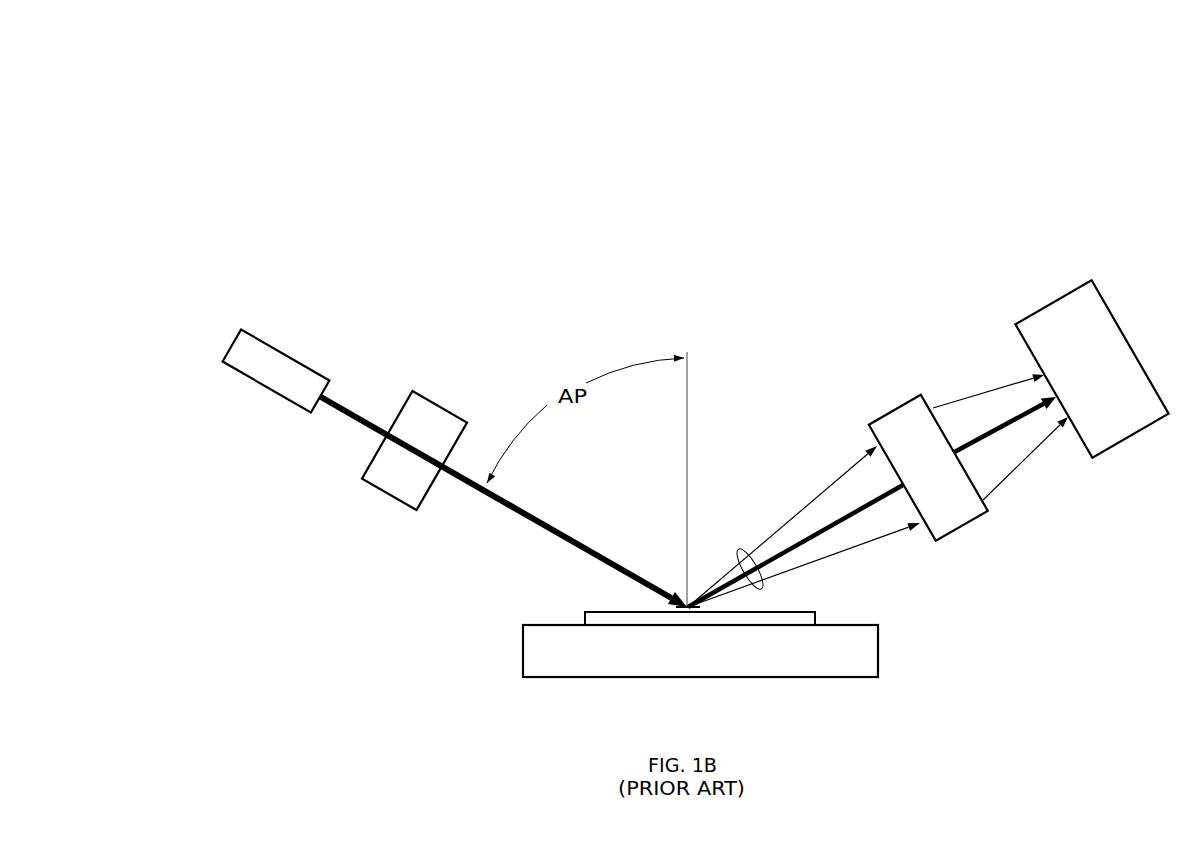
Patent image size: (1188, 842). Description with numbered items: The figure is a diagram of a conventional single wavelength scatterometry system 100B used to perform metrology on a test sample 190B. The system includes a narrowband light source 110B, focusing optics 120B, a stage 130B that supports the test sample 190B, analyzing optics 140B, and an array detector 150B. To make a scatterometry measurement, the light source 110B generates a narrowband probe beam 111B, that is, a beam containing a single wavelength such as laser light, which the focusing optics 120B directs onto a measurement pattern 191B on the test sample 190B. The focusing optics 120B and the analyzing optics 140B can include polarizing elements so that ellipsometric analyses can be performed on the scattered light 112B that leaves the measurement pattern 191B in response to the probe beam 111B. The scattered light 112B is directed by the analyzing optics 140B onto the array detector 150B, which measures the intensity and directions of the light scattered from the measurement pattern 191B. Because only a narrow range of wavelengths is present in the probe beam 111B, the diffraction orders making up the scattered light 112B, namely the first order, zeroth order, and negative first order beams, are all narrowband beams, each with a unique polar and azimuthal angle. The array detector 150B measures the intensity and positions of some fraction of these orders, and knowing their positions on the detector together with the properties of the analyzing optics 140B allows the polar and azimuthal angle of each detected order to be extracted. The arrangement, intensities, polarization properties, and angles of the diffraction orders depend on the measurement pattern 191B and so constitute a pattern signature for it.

The single wavelength scatterometry system 100B is at (291, 172).
The narrowband light source 110B is at (275, 345).
The narrowband probe beam 111B is at (535, 527).
The focusing optics 120B is at (440, 405).
The stage 130B is at (865, 666).
The analyzing optics 140B is at (895, 407).
The array detector 150B is at (1045, 303).
The test sample 190B is at (585, 612).
The measurement pattern 191B is at (682, 607).
The scattered light 112B is at (878, 494).